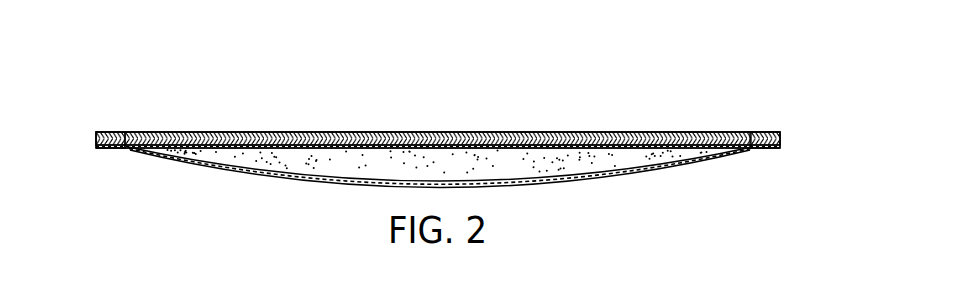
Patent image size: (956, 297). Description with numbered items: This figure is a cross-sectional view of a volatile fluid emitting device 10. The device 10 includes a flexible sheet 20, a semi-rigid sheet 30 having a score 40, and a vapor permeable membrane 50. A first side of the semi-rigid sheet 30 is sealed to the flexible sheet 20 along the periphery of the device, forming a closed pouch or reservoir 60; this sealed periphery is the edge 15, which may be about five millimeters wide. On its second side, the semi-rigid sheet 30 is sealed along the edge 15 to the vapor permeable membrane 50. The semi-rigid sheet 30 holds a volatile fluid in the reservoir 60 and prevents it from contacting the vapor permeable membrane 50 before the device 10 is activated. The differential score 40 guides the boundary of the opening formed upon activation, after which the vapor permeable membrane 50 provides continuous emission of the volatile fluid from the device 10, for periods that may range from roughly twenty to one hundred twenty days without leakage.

The device 10 is at (220, 96).
The edge 15 is at (106, 122).
The flexible sheet 20 is at (585, 179).
The semi-rigid sheet 30 is at (352, 139).
The score 40 is at (437, 144).
The vapor permeable membrane 50 is at (611, 132).
The reservoir 60 is at (293, 162).